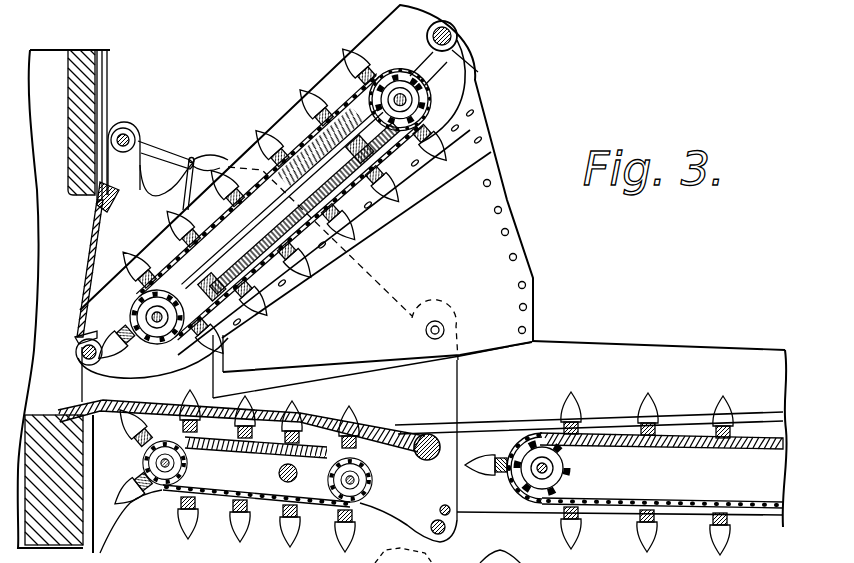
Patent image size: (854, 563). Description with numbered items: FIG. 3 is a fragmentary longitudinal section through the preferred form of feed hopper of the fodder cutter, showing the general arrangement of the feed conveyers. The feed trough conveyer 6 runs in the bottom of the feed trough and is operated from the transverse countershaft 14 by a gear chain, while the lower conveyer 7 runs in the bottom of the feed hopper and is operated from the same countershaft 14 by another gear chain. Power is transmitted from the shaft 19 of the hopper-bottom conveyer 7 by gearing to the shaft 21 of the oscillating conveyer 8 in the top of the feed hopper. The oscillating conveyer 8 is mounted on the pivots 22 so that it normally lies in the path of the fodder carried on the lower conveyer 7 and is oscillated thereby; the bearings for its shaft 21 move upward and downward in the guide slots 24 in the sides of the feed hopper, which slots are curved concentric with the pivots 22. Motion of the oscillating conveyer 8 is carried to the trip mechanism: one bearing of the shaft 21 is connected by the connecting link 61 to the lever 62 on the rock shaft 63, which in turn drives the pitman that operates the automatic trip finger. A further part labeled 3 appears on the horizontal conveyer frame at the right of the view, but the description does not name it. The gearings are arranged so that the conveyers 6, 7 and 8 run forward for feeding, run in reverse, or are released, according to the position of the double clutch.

The horizontal conveyor 3 is at (622, 446).
The feed trough conveyer 6 is at (693, 508).
The lower conveyer 7 is at (372, 493).
The oscillating conveyer 8 is at (300, 138).
The transverse countershaft 14 is at (278, 476).
The shaft of the hopper-bottom conveyer 19 is at (143, 465).
The shaft of the oscillating conveyer 21 is at (88, 360).
The pivots 22 is at (443, 327).
The guide slots 24 is at (181, 157).
The connecting link 61 is at (216, 165).
The lever 62 is at (160, 140).
The rock shaft 63 is at (126, 128).